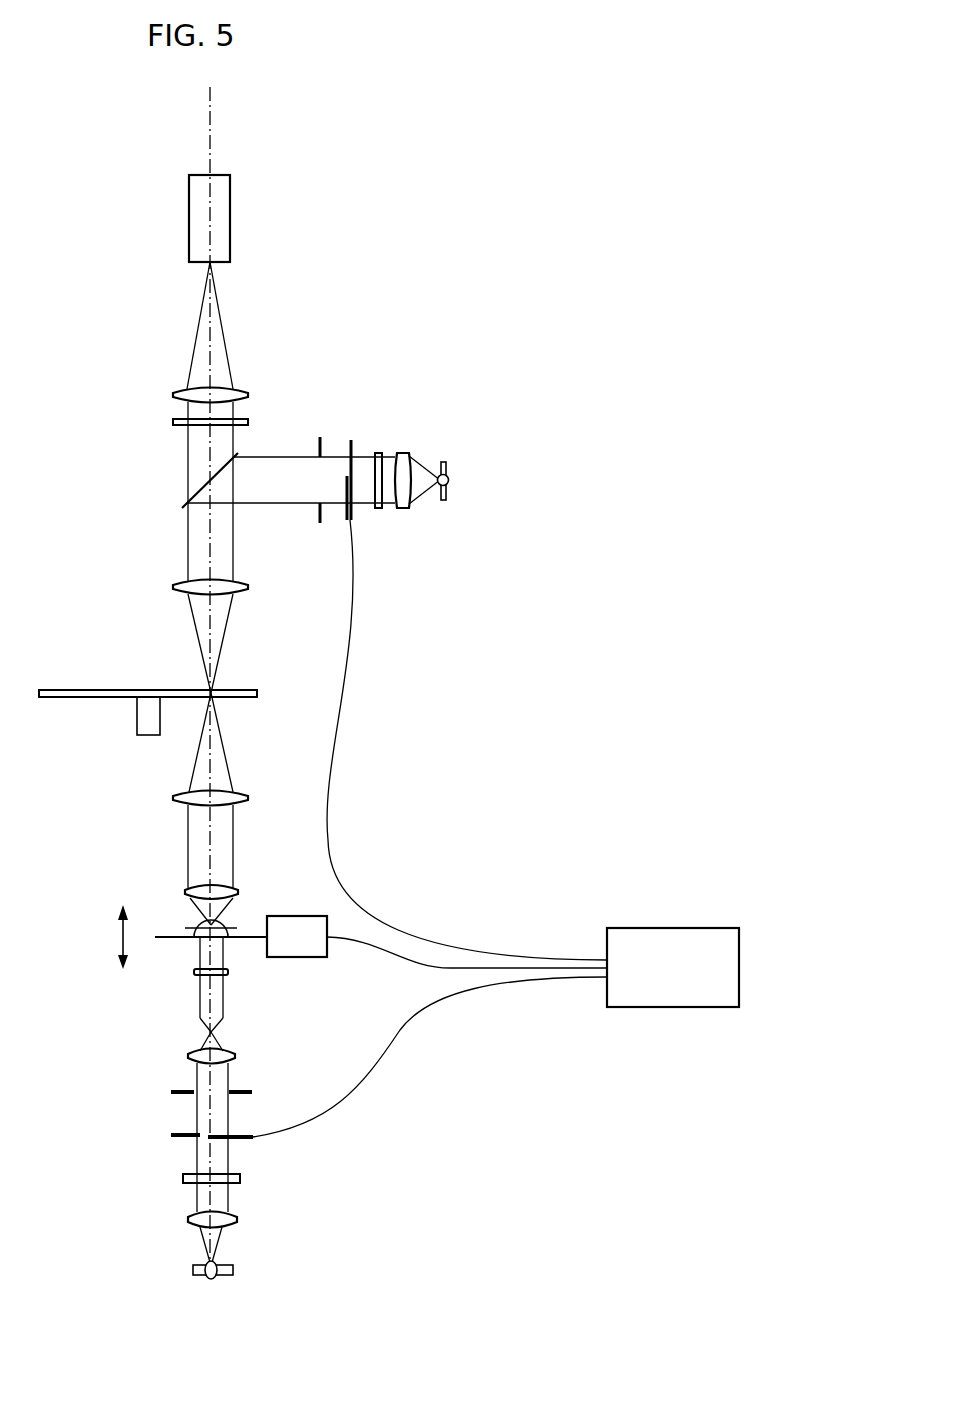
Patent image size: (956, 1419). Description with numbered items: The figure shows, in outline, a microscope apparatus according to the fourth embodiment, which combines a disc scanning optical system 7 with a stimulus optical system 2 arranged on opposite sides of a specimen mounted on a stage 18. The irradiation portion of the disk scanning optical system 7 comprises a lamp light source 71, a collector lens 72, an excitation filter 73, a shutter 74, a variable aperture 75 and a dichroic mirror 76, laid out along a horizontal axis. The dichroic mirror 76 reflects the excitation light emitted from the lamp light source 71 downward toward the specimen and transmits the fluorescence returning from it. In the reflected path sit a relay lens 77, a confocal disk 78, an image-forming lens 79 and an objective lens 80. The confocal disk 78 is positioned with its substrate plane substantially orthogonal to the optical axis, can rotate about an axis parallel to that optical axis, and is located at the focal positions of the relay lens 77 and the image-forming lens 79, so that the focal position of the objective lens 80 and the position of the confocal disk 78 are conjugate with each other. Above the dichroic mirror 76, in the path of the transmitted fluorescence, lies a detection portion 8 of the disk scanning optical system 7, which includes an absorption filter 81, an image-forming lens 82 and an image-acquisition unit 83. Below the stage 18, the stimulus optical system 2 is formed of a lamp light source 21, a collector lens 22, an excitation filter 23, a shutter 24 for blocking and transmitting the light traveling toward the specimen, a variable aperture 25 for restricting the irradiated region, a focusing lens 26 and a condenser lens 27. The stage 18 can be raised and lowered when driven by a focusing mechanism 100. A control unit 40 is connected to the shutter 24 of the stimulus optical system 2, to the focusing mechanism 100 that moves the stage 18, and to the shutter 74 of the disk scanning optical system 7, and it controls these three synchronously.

The stimulus optical system 2 is at (70, 995).
The disc scanning optical system 7 is at (397, 353).
The detection portion 8 is at (292, 198).
The stage 18 is at (250, 940).
The lamp light source 21 is at (224, 1279).
The collector lens 22 is at (238, 1219).
The excitation filter 23 is at (183, 1178).
The shutter 24 is at (172, 1133).
The variable aperture 25 is at (236, 1090).
The focusing lens 26 is at (188, 1056).
The condenser lens 27 is at (194, 972).
The control unit 40 is at (672, 928).
The lamp light source 71 is at (448, 468).
The collector lens 72 is at (402, 453).
The excitation filter 73 is at (378, 453).
The shutter 74 is at (350, 440).
The variable aperture 75 is at (318, 520).
The dichroic mirror 76 is at (196, 494).
The relay lens 77 is at (176, 585).
The confocal disk 78 is at (100, 690).
The image-forming lens 79 is at (173, 797).
The objective lens 80 is at (186, 893).
The absorption filter 81 is at (173, 422).
The image-forming lens 82 is at (182, 390).
The image-acquisition unit 83 is at (189, 223).
The focusing mechanism 100 is at (292, 916).